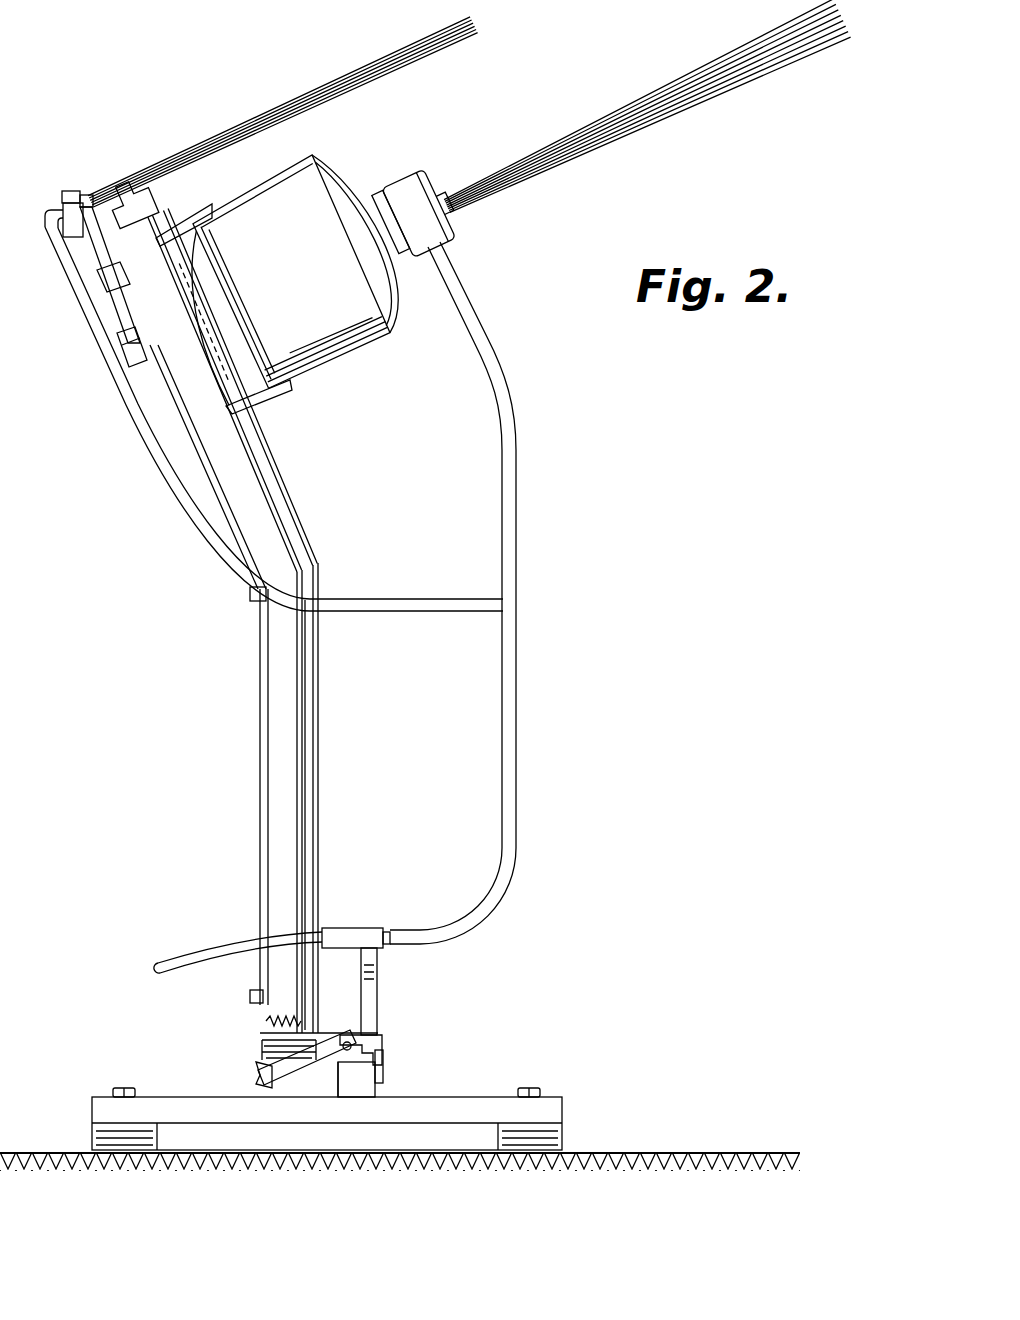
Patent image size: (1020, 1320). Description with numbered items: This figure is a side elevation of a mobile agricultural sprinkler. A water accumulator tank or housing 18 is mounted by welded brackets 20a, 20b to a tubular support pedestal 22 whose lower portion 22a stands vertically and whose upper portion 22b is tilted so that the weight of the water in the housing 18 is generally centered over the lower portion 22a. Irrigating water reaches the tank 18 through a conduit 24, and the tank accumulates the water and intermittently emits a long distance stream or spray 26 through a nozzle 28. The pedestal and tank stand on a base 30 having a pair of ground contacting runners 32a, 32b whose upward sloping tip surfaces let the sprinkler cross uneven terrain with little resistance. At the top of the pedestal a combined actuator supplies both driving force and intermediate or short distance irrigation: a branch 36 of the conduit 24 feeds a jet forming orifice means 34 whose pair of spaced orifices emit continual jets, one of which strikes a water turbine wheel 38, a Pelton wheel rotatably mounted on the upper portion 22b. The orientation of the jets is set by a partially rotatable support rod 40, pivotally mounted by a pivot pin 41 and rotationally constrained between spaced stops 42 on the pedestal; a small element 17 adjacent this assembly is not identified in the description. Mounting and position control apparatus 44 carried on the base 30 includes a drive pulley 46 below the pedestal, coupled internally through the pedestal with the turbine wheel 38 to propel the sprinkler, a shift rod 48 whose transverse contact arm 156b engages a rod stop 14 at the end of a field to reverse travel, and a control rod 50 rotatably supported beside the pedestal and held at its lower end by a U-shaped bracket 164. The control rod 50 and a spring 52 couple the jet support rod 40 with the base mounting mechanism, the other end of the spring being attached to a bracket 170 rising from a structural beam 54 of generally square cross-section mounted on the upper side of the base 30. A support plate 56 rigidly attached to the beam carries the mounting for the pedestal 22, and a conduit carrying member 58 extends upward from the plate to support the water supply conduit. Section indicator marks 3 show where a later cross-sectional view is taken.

The section line 3- 3 is at (129, 783).
The rod stop 14 is at (220, 313).
The hose coupling 17 is at (55, 184).
The water accumulator tank 18 is at (385, 338).
The welded bracket 20a is at (172, 222).
The welded bracket 20b is at (275, 398).
The tubular support pedestal 22 is at (336, 565).
The lower portion 22a is at (300, 762).
The upper portion 22b is at (292, 526).
The conduit 24 is at (480, 332).
The long distance stream 26 is at (710, 72).
The nozzle 28 is at (422, 190).
The base 30 is at (440, 1113).
The ground contacting runner 32a is at (535, 1145).
The ground contacting runner 32b is at (122, 1133).
The jet forming orifice means 34 is at (83, 186).
The branch 36 is at (172, 482).
The water turbine wheel 38 is at (113, 180).
The support rod 40 is at (100, 280).
The pivot pin 41 is at (115, 302).
The stops 42 is at (88, 247).
The mounting and position control apparatus 44 is at (402, 1087).
The drive pulley 46 is at (295, 1080).
The shift rod 48 is at (335, 1040).
The control rod 50 is at (260, 703).
The spring 52 is at (264, 1034).
The structural beam 54 is at (350, 1085).
The support plate 56 is at (373, 1052).
The conduit carrying member 58 is at (365, 950).
The transverse contact arm 156b is at (256, 1073).
The U-shaped bracket 164 is at (240, 990).
The bracket 170 is at (386, 1065).